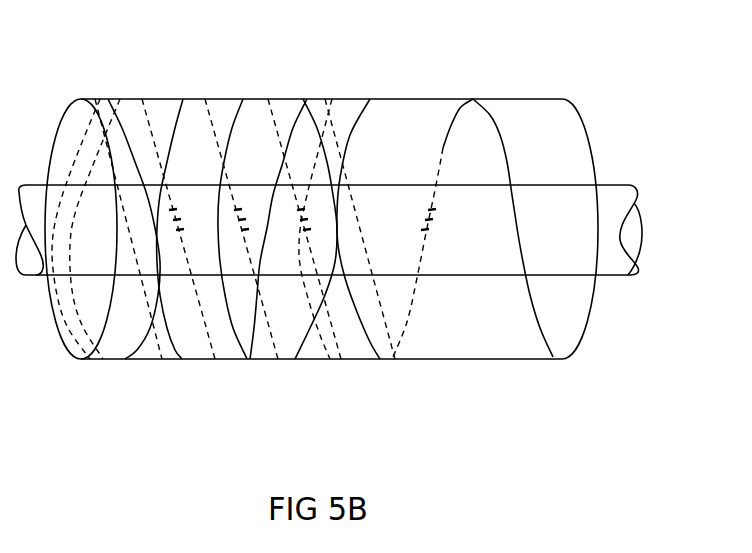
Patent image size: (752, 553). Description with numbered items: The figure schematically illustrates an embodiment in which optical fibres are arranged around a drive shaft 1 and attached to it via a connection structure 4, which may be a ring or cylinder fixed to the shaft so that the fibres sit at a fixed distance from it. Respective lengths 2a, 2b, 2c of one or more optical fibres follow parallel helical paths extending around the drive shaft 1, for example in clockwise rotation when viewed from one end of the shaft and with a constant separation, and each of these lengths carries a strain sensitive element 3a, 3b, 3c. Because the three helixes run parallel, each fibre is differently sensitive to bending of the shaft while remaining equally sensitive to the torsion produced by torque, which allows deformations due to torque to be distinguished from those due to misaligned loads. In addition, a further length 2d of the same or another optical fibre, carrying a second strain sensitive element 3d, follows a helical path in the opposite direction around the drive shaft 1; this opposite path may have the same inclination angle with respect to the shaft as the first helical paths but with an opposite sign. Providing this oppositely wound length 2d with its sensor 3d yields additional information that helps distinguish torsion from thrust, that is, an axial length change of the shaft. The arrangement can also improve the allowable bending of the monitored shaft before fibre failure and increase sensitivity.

The drive shaft 1 is at (664, 226).
The connection structure 4 is at (604, 124).
The first length of optical fibre 2a is at (108, 98).
The length of optical fibre 2b is at (178, 98).
The length of optical fibre 2c is at (240, 98).
The second length of optical fibre 2d is at (500, 98).
The first strain sensitive element 3a is at (172, 244).
The strain sensitive element 3b is at (237, 244).
The strain sensitive element 3c is at (302, 244).
The second strain sensitive element 3d is at (438, 244).